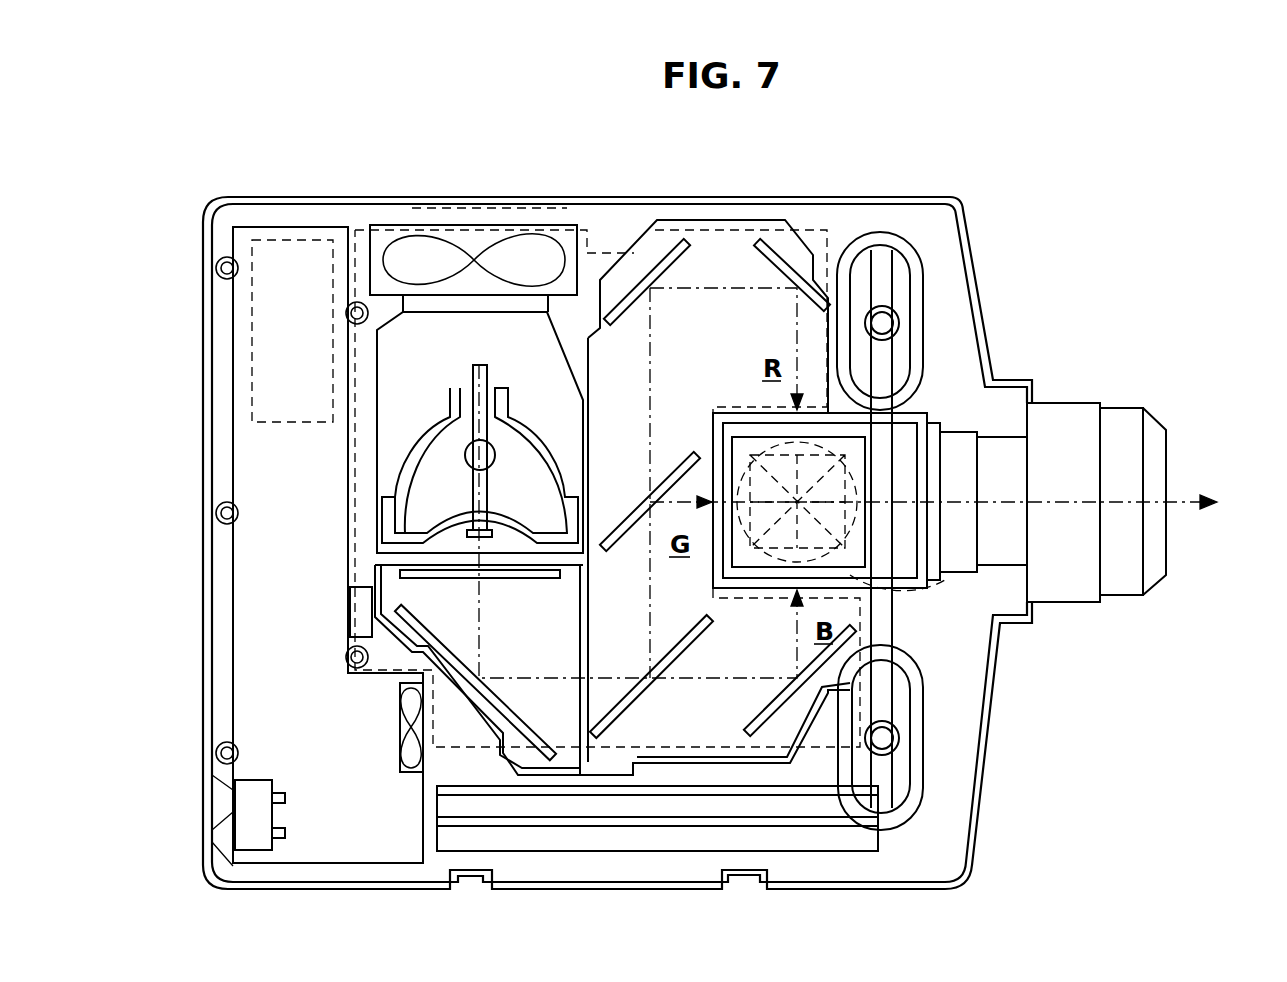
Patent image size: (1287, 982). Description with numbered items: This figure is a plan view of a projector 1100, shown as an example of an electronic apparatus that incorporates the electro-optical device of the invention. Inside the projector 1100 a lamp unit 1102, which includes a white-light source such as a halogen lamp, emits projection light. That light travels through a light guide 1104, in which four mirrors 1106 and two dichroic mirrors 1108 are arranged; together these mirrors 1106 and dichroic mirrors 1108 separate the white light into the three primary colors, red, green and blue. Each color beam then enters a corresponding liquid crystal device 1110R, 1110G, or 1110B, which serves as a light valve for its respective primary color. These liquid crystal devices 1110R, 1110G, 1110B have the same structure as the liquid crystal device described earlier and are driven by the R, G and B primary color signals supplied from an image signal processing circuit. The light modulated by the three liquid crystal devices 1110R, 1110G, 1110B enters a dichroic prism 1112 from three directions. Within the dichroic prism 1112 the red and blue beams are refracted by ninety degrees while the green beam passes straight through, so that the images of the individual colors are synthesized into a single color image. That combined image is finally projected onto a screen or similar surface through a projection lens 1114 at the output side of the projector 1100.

The projector 1100 is at (979, 207).
The lamp unit 1102 is at (530, 348).
The light guide 1104 is at (660, 218).
The mirror 1106 is at (770, 265).
The dichroic mirror 1108 is at (640, 525).
The liquid crystal device 1110R is at (757, 410).
The liquid crystal device 1110G is at (720, 470).
The liquid crystal device 1110B is at (753, 590).
The dichroic prism 1112 is at (928, 588).
The projection lens 1114 is at (1130, 418).